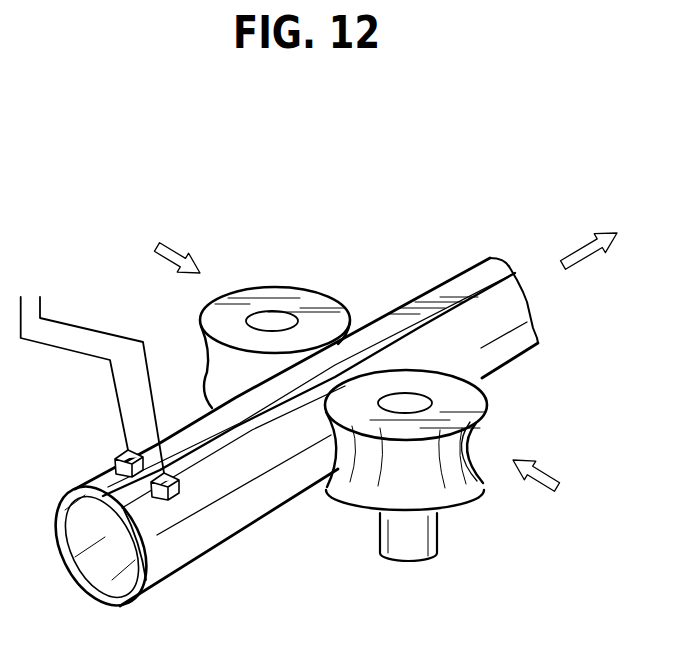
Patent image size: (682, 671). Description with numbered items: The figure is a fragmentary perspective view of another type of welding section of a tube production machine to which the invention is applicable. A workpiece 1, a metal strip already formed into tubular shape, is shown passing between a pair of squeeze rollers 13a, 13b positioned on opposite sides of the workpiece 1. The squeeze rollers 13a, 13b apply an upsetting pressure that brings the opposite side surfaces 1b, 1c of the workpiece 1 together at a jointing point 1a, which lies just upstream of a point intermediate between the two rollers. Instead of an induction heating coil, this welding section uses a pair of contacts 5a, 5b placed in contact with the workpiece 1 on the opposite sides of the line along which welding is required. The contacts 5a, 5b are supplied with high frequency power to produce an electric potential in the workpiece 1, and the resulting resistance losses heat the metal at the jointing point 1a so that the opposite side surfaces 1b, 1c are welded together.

The workpiece 1 is at (278, 424).
The jointing point 1a is at (329, 373).
The opposite side surface 1b is at (63, 524).
The opposite side surface 1c is at (148, 555).
The contact 5a is at (122, 454).
The contact 5b is at (180, 493).
The squeeze roller 13a is at (291, 287).
The squeeze roller 13b is at (458, 487).